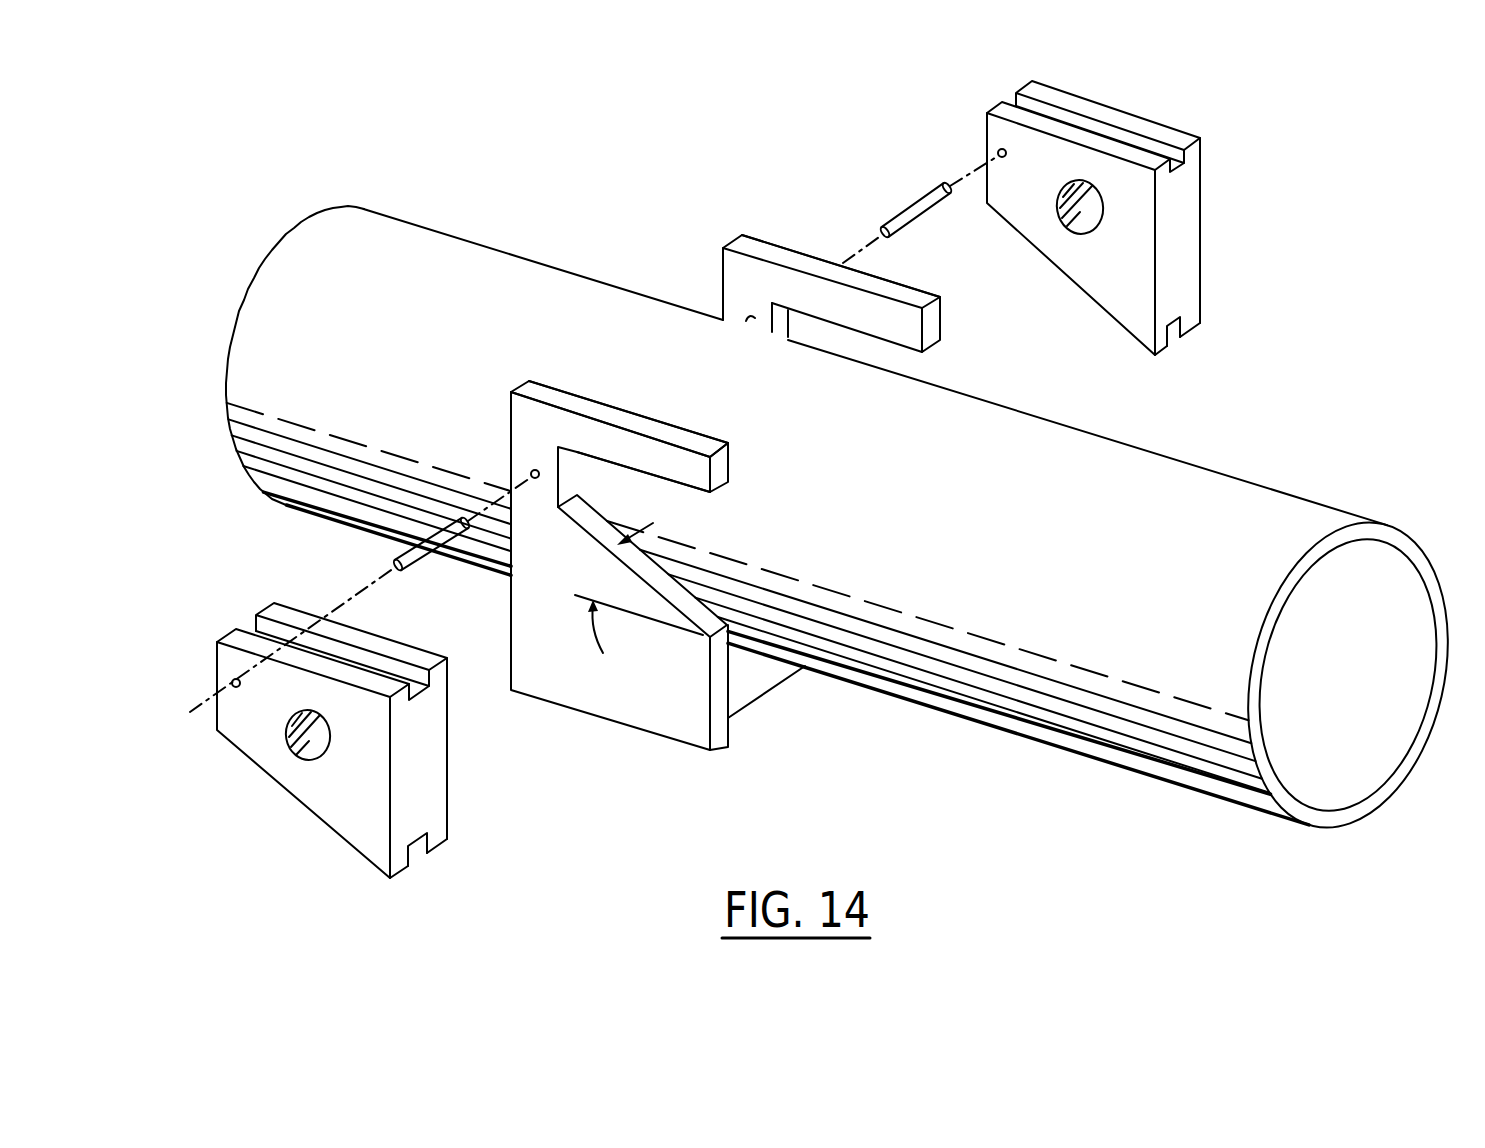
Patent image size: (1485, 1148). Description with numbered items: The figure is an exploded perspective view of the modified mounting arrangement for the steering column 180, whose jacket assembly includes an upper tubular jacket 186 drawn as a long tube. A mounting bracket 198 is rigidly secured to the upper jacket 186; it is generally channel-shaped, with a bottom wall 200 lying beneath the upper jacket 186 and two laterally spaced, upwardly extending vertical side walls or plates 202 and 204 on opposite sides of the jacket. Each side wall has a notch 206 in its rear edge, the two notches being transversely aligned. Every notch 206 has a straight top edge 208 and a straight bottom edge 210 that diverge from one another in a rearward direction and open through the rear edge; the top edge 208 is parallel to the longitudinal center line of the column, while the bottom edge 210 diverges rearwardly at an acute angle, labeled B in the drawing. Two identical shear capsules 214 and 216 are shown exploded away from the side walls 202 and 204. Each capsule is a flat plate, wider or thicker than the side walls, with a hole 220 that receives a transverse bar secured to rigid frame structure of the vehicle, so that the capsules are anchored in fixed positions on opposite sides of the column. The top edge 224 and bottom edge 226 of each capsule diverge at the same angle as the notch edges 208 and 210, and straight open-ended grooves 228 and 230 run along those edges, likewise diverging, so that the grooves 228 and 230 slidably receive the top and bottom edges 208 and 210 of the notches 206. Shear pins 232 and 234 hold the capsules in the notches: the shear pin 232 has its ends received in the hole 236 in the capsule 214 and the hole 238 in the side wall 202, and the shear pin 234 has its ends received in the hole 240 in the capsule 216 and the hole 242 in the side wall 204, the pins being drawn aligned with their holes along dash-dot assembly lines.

The steering column 180 is at (1310, 450).
The upper tubular jacket 186 is at (543, 265).
The mounting bracket 198 is at (692, 531).
The bottom wall 200 is at (778, 702).
The side wall 202 is at (580, 700).
The side wall 204 is at (792, 275).
The notch 206 is at (632, 478).
The top edge 208 is at (720, 492).
The bottom edge 210 is at (600, 518).
The shear capsule 214 is at (211, 628).
The shear capsule 216 is at (962, 131).
The hole 220 is at (1078, 225).
The top edge 224 is at (1193, 137).
The bottom edge 226 is at (1125, 333).
The groove 228 is at (1140, 140).
The groove 230 is at (1178, 335).
The shear pin 232 is at (425, 566).
The shear pin 234 is at (913, 210).
The hole 236 is at (236, 690).
The hole 238 is at (530, 472).
The hole 240 is at (752, 317).
The hole 242 is at (1003, 163).